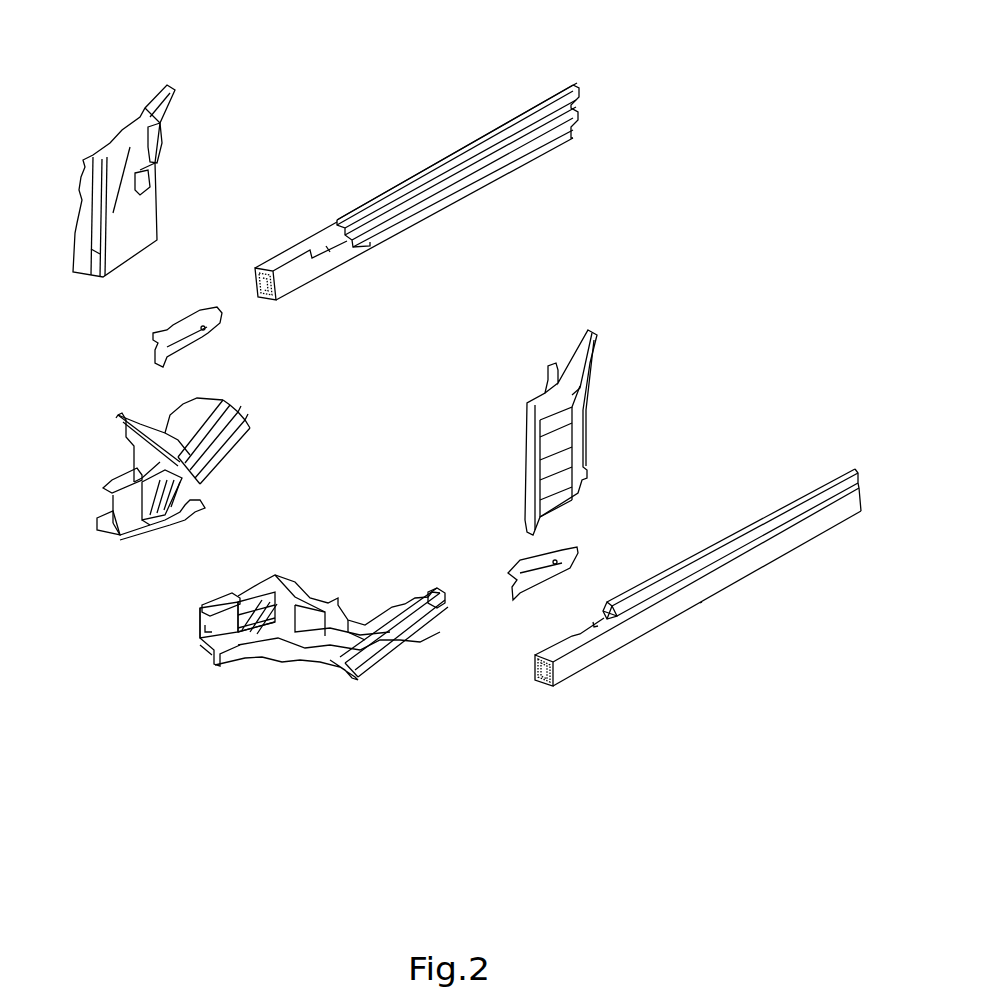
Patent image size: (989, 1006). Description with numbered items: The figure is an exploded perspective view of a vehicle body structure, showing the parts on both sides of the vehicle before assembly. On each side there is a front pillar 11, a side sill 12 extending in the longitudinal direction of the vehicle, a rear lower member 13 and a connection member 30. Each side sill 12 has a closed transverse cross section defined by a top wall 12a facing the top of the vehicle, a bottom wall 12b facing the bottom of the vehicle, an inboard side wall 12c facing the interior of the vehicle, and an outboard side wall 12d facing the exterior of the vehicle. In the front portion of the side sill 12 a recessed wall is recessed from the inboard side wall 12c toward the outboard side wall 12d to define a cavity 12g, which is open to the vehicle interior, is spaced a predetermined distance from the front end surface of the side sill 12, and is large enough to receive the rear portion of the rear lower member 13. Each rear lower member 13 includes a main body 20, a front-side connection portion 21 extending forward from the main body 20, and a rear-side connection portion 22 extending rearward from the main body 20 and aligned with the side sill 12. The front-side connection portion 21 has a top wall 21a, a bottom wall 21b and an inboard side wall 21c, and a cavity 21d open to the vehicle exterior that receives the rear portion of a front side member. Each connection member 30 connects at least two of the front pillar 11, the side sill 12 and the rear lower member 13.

The front pillar 11 is at (178, 70).
The side sill 12 is at (558, 350).
The top wall 12a is at (455, 165).
The bottom wall 12b is at (422, 222).
The inboard side wall 12c is at (474, 186).
The outboard side wall 12d is at (722, 585).
The cavity 12g is at (328, 246).
The rear lower member 13 is at (118, 404).
The main body 20 is at (248, 549).
The front-side connection portion 21 is at (151, 559).
The top wall 21a is at (113, 485).
The bottom wall 21b is at (98, 522).
The inboard side wall 21c is at (122, 510).
The cavity 21d is at (105, 503).
The rear-side connection portion 22 is at (244, 437).
The connection member 30 is at (234, 327).